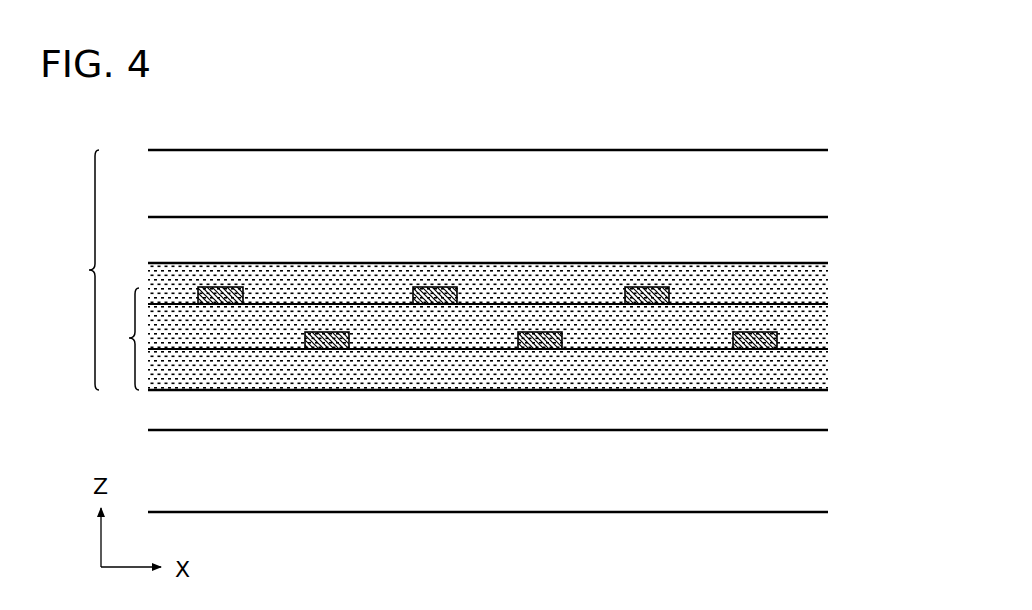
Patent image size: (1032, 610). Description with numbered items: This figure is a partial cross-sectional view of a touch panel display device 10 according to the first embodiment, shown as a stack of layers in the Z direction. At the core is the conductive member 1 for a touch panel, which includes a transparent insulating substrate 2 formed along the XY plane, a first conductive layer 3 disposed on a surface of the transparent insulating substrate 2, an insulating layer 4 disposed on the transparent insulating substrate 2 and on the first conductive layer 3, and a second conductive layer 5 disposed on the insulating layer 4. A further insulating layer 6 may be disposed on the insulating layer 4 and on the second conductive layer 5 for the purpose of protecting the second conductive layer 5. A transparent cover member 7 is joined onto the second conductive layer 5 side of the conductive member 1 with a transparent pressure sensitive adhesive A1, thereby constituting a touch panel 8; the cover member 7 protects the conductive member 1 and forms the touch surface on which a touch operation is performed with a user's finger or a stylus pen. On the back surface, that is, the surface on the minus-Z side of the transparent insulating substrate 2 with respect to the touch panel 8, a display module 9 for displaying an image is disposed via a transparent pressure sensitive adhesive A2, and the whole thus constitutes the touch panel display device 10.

The touch panel display device 10 is at (814, 120).
The transparent cover member 7 is at (808, 188).
The transparent pressure sensitive adhesive A1 is at (808, 245).
The insulating layer 6 is at (808, 291).
The second conductive layer 5 is at (219, 292).
The insulating layer 4 is at (808, 335).
The first conductive layer 3 is at (325, 332).
The transparent insulating substrate 2 is at (808, 374).
The transparent pressure sensitive adhesive A2 is at (808, 415).
The display module 9 is at (808, 475).
The touch panel 8 is at (87, 270).
The conductive member for a touch panel 1 is at (129, 339).